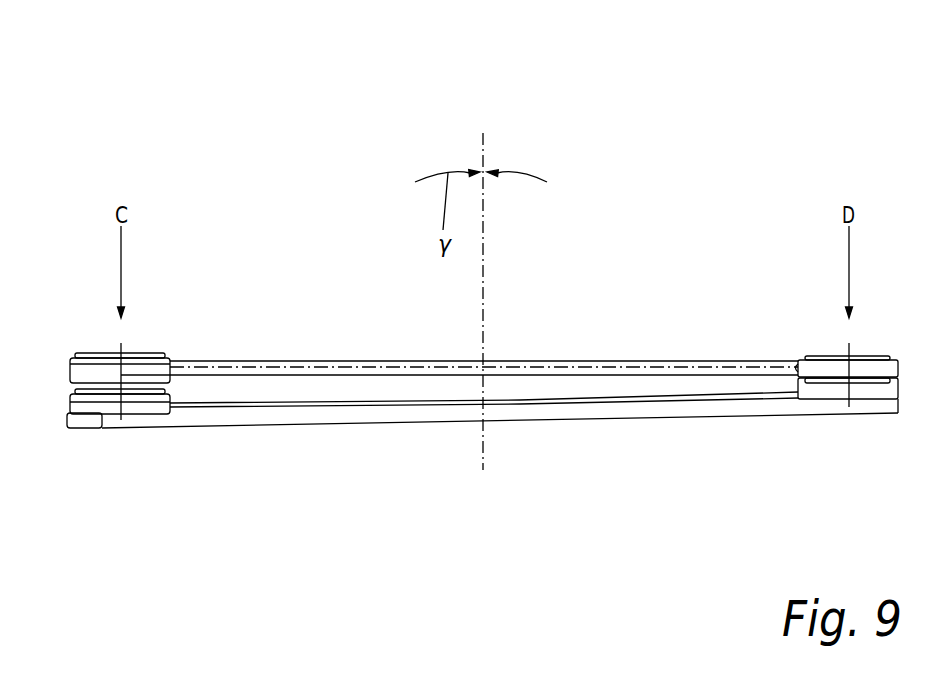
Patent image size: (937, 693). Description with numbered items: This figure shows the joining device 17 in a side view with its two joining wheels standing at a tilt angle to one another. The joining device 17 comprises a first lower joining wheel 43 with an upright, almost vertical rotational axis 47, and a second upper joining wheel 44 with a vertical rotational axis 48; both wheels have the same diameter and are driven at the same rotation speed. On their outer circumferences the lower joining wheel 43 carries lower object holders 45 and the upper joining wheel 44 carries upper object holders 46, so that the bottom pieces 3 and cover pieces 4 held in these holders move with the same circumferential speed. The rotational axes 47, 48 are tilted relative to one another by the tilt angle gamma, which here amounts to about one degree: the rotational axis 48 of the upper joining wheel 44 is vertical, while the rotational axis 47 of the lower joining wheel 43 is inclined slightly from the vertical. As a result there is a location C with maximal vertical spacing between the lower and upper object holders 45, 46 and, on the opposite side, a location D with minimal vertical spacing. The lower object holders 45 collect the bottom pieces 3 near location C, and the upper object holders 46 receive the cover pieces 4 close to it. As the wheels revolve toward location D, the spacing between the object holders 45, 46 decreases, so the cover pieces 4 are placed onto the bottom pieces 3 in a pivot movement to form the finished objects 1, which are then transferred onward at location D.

The finished object 1 is at (826, 368).
The bottom piece 3 is at (95, 420).
The cover piece 4 is at (93, 370).
The joining device 17 is at (249, 121).
The first lower joining wheel 43 is at (323, 412).
The second upper joining wheel 44 is at (322, 363).
The lower object holder 45 is at (146, 450).
The upper object holder 46 is at (147, 328).
The rotational axis of the lower joining wheel 47 is at (481, 153).
The rotational axis of the upper joining wheel 48 is at (485, 153).